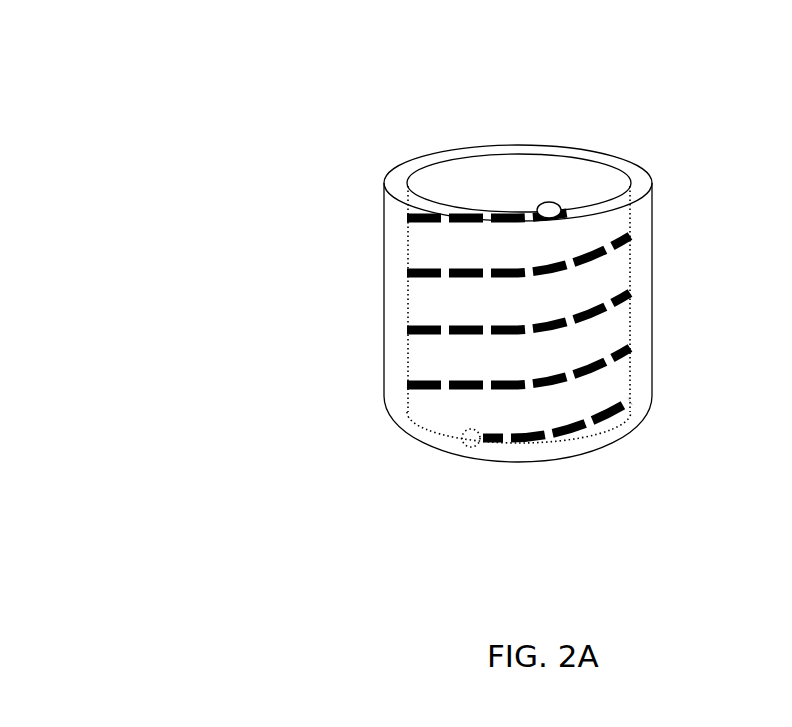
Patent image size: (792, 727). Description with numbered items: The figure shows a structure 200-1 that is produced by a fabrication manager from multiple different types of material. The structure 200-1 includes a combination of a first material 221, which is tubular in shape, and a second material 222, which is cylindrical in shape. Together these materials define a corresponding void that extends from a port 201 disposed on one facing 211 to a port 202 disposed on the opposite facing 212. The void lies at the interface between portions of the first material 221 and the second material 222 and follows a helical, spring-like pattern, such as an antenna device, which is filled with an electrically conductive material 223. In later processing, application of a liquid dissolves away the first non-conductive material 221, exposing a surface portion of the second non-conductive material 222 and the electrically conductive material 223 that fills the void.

The structure 200-1 is at (443, 308).
The port 201 is at (471, 448).
The port 202 is at (550, 203).
The facing 211 is at (586, 506).
The facing 212 is at (471, 122).
The first material 221 is at (382, 297).
The second material 222 is at (452, 185).
The electrically conductive material 223 is at (470, 337).